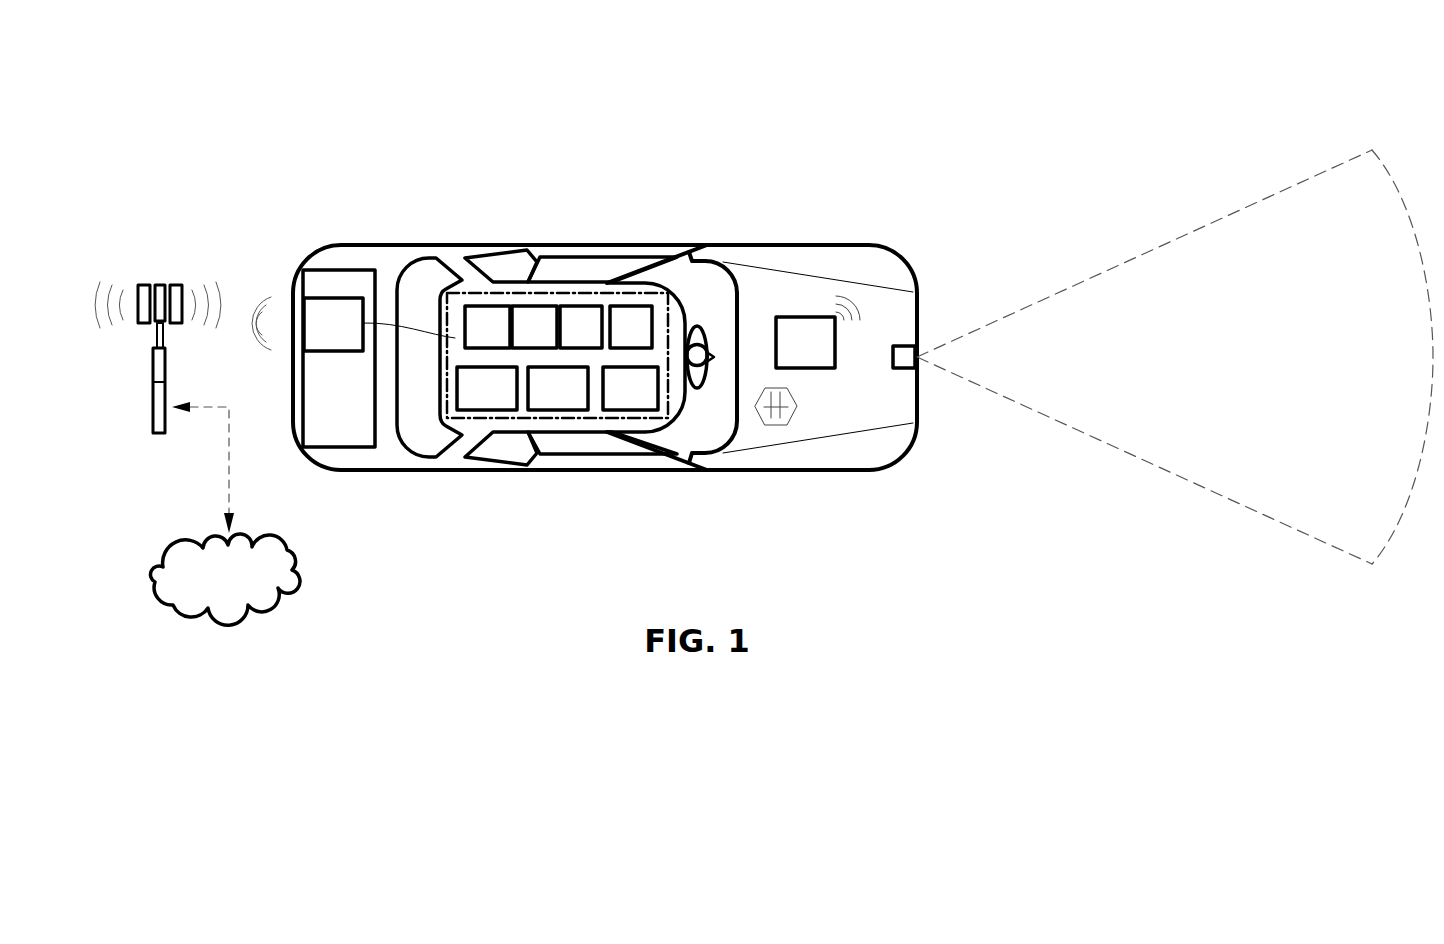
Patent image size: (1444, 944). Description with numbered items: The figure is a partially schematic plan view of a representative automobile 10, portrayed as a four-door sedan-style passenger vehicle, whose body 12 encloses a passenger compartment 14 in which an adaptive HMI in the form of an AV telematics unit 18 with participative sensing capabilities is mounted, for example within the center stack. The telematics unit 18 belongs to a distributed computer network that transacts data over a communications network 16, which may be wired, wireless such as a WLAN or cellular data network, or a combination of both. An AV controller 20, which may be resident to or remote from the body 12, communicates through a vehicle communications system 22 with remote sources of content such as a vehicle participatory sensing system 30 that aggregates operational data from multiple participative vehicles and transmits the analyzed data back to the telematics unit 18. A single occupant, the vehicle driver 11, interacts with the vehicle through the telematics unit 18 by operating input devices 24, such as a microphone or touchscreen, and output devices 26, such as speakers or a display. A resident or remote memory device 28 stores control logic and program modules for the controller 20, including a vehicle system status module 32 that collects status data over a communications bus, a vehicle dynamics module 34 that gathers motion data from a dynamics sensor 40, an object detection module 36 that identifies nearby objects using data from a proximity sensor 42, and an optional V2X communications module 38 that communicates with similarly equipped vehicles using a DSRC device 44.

The automobile 10 is at (307, 78).
The vehicle driver 11 is at (697, 390).
The body 12 is at (372, 245).
The passenger compartment 14 is at (689, 258).
The communications network 16 is at (153, 403).
The AV telematics unit 18 is at (438, 322).
The AV controller 20 is at (498, 410).
The vehicle communications system 22 is at (313, 297).
The input device 24 is at (567, 410).
The output device 26 is at (647, 410).
The memory device 28 is at (447, 312).
The vehicle participatory sensing (VPS) system 30 is at (238, 532).
The vehicle system status module 32 is at (482, 306).
The vehicle dynamics module 34 is at (529, 306).
The object detection module 36 is at (578, 306).
The V2X communications module 38 is at (627, 306).
The dynamics sensor 40 is at (791, 417).
The proximity sensor 42 is at (890, 346).
The DSRC device 44 is at (792, 317).